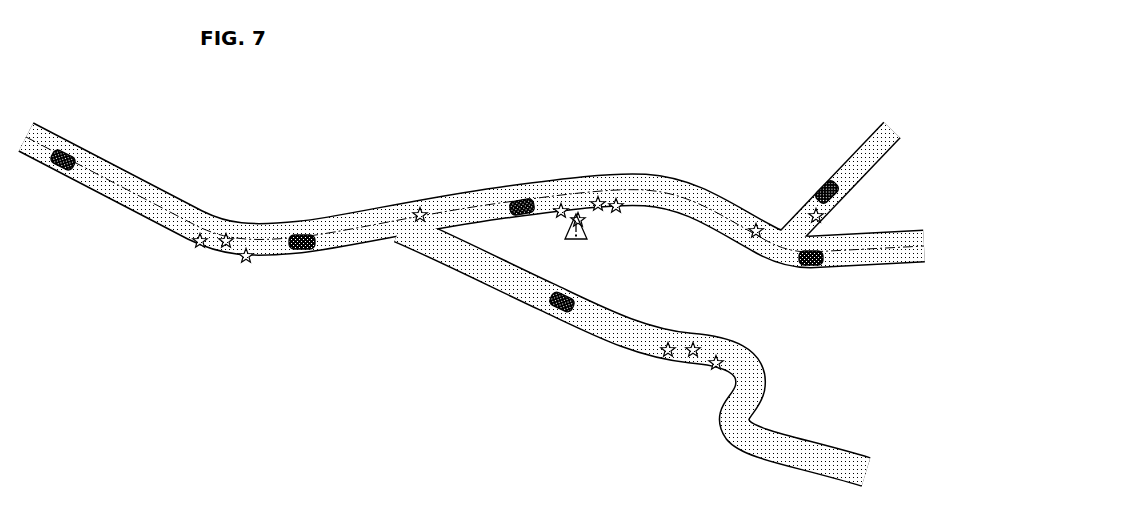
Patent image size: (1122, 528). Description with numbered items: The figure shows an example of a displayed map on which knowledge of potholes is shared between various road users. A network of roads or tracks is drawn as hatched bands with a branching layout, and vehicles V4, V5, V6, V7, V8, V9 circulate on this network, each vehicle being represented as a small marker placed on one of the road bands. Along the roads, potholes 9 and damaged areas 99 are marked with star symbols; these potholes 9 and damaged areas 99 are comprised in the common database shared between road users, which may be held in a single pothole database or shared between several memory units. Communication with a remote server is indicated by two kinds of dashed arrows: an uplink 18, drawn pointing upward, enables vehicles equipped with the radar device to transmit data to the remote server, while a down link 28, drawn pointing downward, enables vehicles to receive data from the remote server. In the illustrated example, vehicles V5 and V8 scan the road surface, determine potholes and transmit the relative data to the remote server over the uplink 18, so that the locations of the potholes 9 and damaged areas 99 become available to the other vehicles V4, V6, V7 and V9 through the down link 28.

The vehicle V4 is at (809, 268).
The vehicle V5 is at (834, 197).
The vehicle V6 is at (70, 155).
The vehicle V7 is at (301, 234).
The vehicle V8 is at (516, 203).
The vehicle V9 is at (558, 310).
The pothole 9 is at (235, 253).
The damaged area 99 is at (607, 210).
The down link 28 is at (330, 186).
The uplink 18 is at (513, 173).